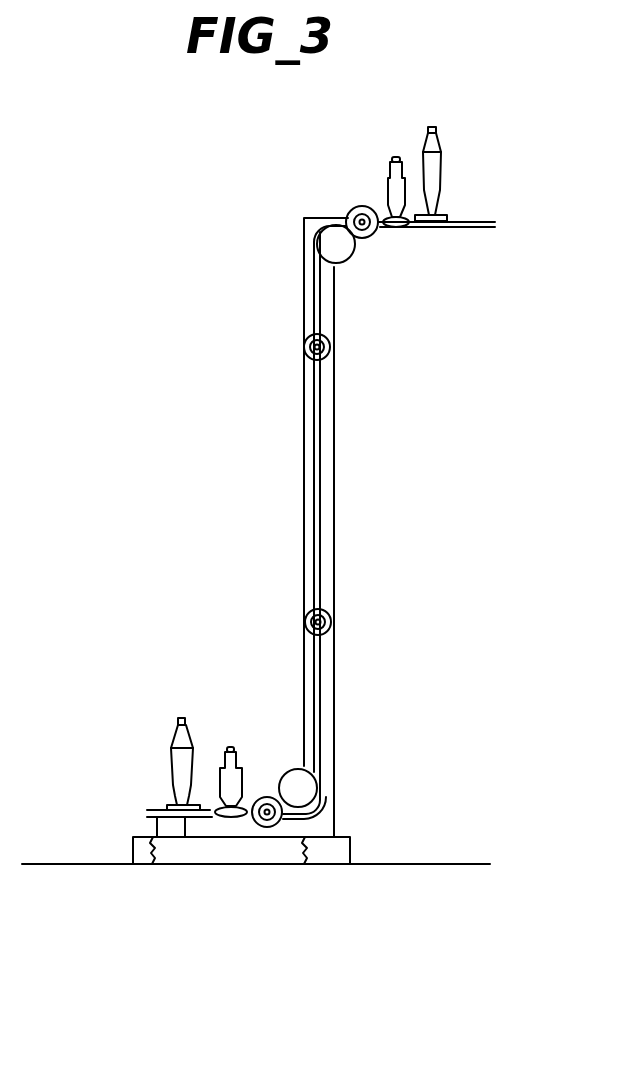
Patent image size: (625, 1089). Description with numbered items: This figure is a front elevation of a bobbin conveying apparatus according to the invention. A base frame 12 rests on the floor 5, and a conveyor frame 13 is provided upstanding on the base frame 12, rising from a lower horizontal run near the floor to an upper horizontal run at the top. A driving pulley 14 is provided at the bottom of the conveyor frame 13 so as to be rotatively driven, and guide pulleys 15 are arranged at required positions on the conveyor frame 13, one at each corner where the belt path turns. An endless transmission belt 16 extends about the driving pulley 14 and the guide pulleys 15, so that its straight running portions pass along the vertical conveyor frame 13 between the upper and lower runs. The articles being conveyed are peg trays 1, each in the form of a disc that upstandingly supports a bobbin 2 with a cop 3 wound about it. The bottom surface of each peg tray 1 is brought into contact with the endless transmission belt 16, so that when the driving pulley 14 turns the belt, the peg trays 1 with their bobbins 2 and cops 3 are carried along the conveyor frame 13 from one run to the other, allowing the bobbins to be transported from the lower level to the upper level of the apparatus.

The peg tray 1 is at (448, 219).
The bobbin 2 is at (434, 127).
The cop 3 is at (354, 209).
The floor 5 is at (438, 863).
The base frame 12 is at (350, 851).
The conveyor frame 13 is at (335, 566).
The driving pulley 14 is at (186, 818).
The guide pulley 15 is at (350, 258).
The endless transmission belt 16 is at (322, 408).